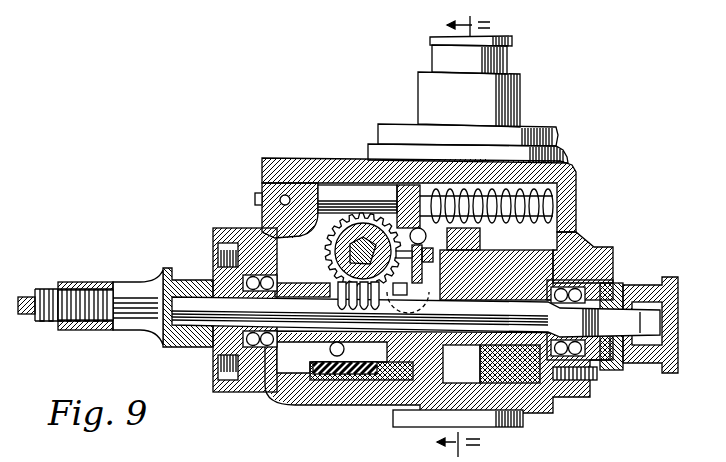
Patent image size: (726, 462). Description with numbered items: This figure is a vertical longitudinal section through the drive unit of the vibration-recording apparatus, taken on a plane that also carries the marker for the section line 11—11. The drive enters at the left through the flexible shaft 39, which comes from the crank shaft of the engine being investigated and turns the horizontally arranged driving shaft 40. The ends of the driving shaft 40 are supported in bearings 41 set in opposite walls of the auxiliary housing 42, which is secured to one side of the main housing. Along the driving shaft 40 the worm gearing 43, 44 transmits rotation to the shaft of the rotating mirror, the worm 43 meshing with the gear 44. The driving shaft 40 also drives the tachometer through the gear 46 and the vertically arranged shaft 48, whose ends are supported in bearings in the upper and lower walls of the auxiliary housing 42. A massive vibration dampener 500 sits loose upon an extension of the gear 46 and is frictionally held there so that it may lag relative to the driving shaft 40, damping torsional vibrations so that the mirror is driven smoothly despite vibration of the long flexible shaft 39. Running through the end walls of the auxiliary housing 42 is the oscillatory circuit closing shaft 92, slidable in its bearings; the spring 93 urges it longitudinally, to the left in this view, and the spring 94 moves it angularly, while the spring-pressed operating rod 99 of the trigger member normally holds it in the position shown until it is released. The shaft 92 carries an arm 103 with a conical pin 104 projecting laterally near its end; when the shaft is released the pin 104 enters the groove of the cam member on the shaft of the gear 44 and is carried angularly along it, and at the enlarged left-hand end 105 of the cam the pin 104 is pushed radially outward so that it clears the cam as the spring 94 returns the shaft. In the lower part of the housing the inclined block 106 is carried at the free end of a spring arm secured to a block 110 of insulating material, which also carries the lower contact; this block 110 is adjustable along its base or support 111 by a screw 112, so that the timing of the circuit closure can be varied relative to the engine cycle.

The section line 11— 11 is at (444, 237).
The flexible shaft 39 is at (50, 289).
The driving shaft 40 is at (637, 288).
The bearings 41 is at (213, 352).
The auxiliary housing 42 is at (300, 400).
The worm gearing 43 is at (371, 378).
The gear 44 is at (360, 215).
The gear 46 is at (453, 390).
The vertically arranged shaft 48 is at (500, 160).
The oscillatory circuit closing shaft 92 is at (335, 195).
The spring 93 is at (562, 158).
The spring 94 is at (417, 228).
The spring-pressed operating rod 99 is at (262, 178).
The arm 103 is at (460, 270).
The conical pin 104 is at (398, 247).
The enlarged left-hand end of cam member 105 is at (326, 248).
The inclined block 106 is at (401, 290).
The block of insulating material 110 is at (341, 380).
The base or support 111 is at (302, 378).
The screw 112 is at (330, 350).
The vibration dampener 500 is at (545, 262).